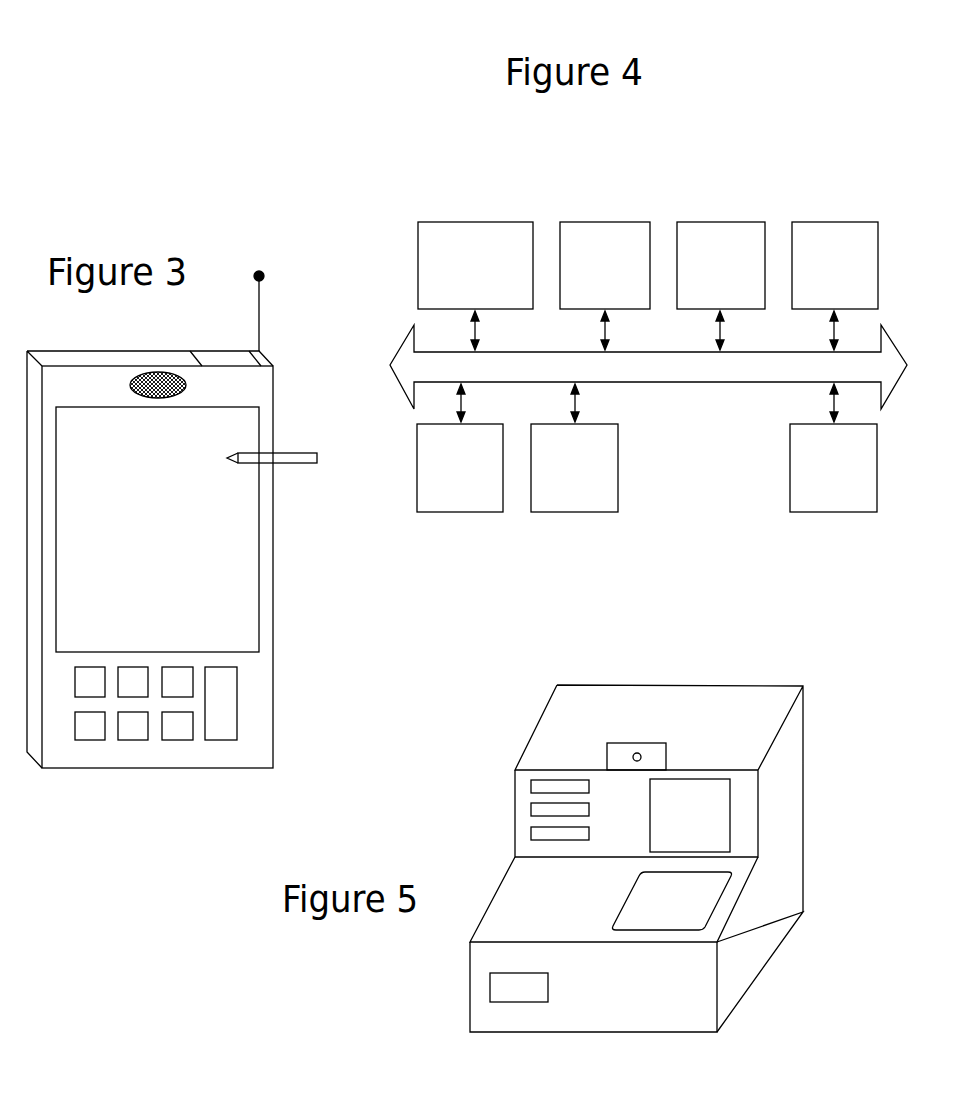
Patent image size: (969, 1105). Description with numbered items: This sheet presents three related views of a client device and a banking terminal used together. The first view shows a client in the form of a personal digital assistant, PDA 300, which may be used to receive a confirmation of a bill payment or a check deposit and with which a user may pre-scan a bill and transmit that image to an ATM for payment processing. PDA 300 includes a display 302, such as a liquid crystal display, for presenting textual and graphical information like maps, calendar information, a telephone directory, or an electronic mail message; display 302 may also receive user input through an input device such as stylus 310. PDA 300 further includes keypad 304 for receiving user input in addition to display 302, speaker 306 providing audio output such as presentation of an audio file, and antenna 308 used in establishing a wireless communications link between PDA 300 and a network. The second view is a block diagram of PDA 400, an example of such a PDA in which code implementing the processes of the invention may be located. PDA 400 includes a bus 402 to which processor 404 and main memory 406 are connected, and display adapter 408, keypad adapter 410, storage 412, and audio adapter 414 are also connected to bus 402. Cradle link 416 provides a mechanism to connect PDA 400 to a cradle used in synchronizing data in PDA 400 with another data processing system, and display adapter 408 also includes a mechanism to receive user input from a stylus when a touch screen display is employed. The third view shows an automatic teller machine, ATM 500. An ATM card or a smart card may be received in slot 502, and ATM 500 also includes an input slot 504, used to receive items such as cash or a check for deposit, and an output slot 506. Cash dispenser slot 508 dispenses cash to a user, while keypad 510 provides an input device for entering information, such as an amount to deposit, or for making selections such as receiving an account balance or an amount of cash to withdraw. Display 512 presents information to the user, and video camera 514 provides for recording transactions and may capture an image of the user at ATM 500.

In FIG. 3, the PDA 300 is at (273, 381).
In FIG. 3, the display 302 is at (174, 540).
In FIG. 3, the keypad 304 is at (273, 670).
In FIG. 3, the speaker 306 is at (158, 373).
In FIG. 3, the antenna 308 is at (260, 296).
In FIG. 3, the stylus 310 is at (317, 456).
In FIG. 4, the PDA 400 is at (515, 537).
In FIG. 4, the bus 402 is at (648, 367).
In FIG. 4, the processor 404 is at (475, 286).
In FIG. 4, the main memory 406 is at (605, 286).
In FIG. 4, the display adapter 408 is at (721, 286).
In FIG. 4, the keypad adapter 410 is at (835, 286).
In FIG. 4, the storage 412 is at (460, 448).
In FIG. 4, the audio adapter 414 is at (574, 448).
In FIG. 4, the cradle link 416 is at (833, 448).
In FIG. 5, the ATM 500 is at (803, 837).
In FIG. 5, the slot 502 is at (531, 786).
In FIG. 5, the input slot 504 is at (531, 810).
In FIG. 5, the output slot 506 is at (531, 834).
In FIG. 5, the cash dispenser slot 508 is at (519, 987).
In FIG. 5, the keypad 510 is at (627, 900).
In FIG. 5, the display 512 is at (690, 815).
In FIG. 5, the video camera 514 is at (666, 757).